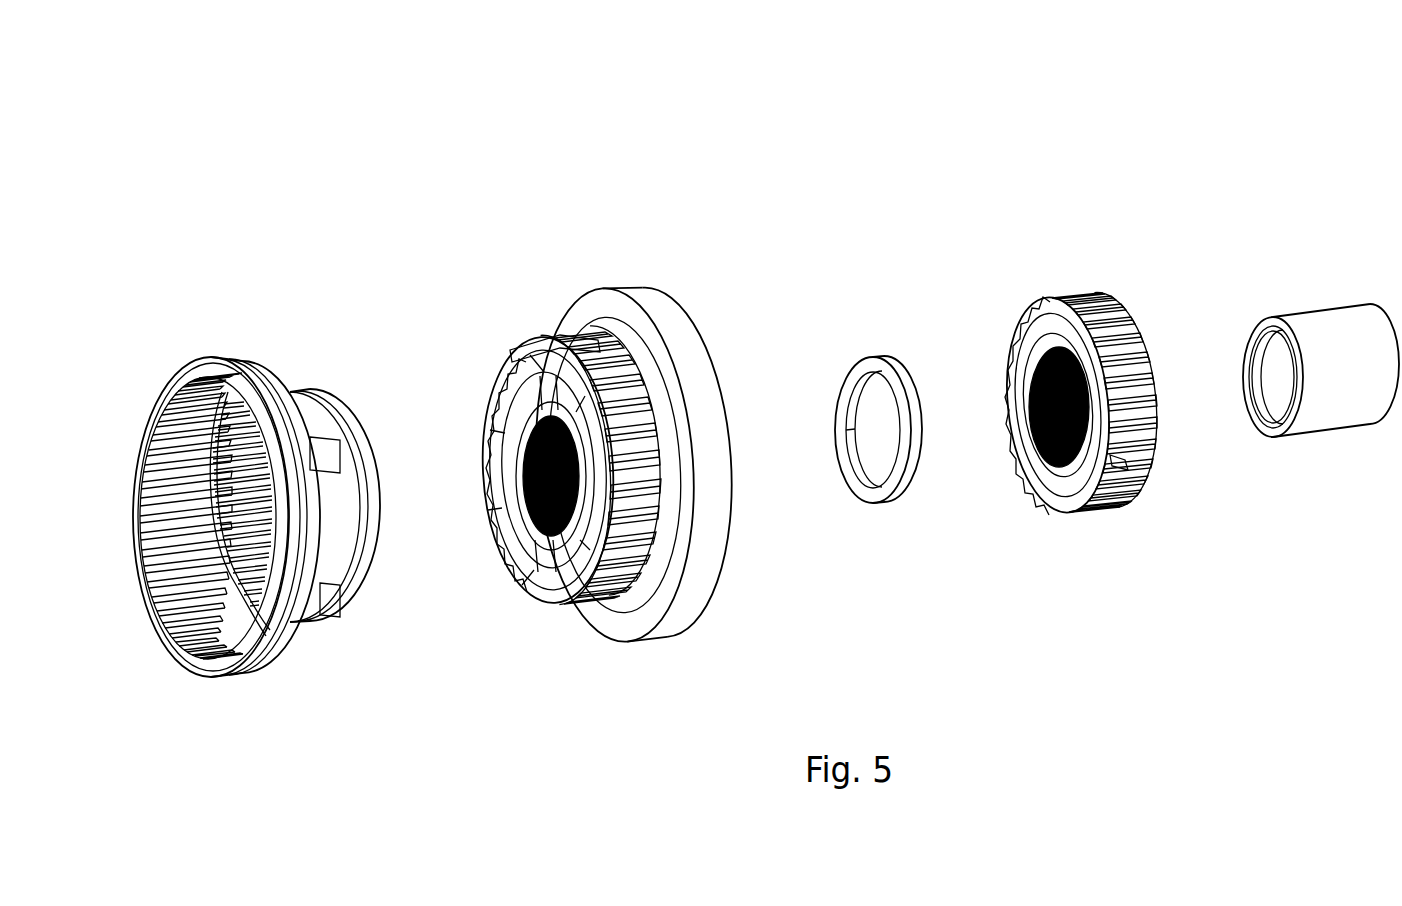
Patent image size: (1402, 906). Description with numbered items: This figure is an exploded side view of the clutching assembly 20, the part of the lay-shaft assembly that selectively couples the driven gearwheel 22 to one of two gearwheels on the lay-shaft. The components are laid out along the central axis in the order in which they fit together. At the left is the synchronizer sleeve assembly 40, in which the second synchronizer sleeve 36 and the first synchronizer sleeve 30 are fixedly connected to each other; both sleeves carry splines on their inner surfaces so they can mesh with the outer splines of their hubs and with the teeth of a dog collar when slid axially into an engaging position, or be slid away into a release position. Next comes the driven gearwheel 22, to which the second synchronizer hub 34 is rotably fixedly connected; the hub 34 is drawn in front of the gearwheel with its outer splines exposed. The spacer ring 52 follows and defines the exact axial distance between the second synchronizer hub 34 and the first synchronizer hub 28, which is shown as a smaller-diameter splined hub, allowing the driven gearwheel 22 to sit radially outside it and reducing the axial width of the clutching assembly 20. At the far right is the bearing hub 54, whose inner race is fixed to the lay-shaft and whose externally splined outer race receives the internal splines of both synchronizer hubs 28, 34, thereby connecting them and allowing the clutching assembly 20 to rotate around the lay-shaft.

The clutching assembly 20 is at (322, 152).
The driven gearwheel 22 is at (636, 308).
The first synchronizer hub 28 is at (1104, 300).
The first synchronizer sleeve 30 is at (320, 392).
The second synchronizer hub 34 is at (567, 324).
The second synchronizer sleeve 36 is at (208, 372).
The synchronizer sleeve assembly 40 is at (352, 695).
The spacer ring 52 is at (885, 357).
The bearing hub 54 is at (1338, 336).